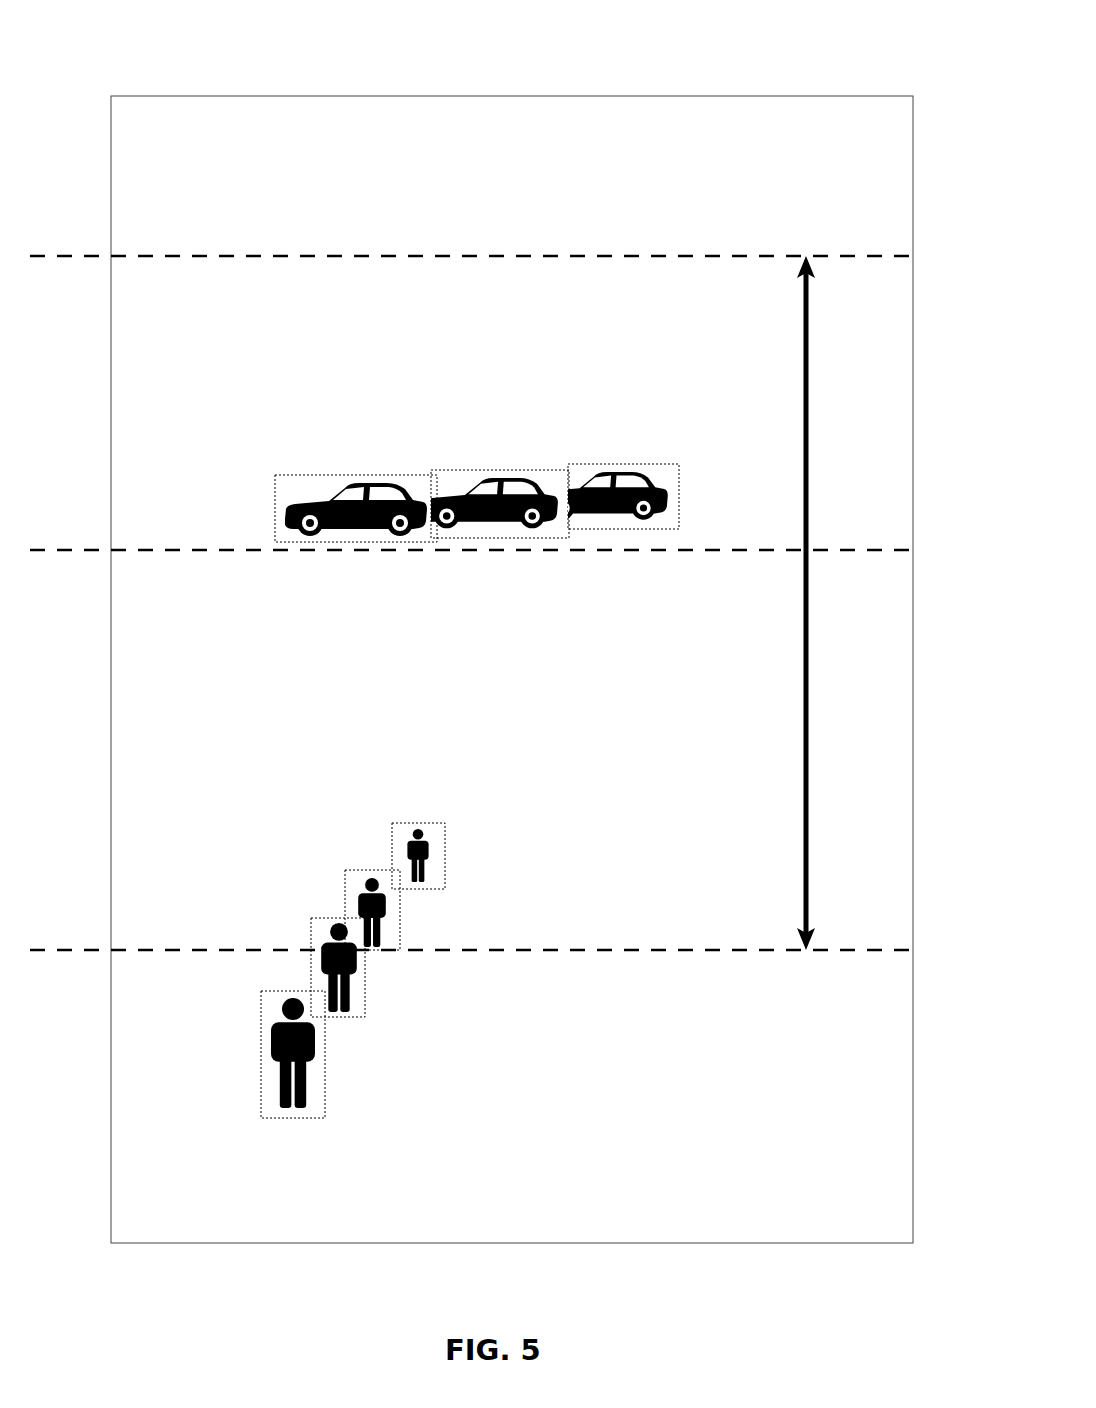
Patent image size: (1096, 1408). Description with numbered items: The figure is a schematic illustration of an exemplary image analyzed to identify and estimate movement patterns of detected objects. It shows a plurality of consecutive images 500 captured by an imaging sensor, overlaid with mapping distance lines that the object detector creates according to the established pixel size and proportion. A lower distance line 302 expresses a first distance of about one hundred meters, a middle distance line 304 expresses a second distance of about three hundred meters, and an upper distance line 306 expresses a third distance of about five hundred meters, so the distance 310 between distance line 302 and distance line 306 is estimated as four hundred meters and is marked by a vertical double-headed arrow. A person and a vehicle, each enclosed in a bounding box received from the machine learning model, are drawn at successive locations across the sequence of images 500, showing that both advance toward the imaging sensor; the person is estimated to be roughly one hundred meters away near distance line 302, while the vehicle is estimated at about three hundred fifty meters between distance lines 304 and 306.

The consecutive exemplary images 500 is at (810, 48).
The distance line 306 is at (471, 237).
The distance line 304 is at (471, 531).
The distance line 302 is at (471, 926).
The distance 310 is at (812, 348).